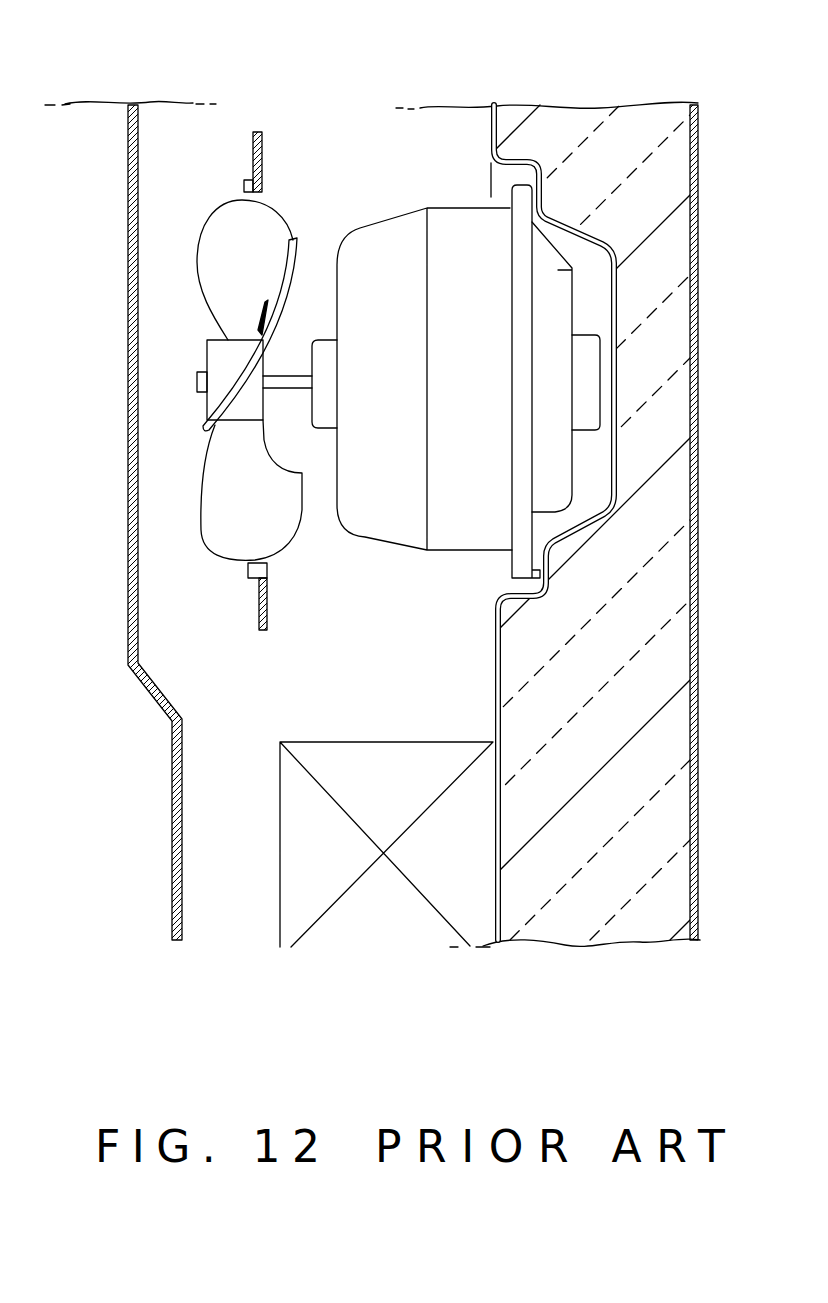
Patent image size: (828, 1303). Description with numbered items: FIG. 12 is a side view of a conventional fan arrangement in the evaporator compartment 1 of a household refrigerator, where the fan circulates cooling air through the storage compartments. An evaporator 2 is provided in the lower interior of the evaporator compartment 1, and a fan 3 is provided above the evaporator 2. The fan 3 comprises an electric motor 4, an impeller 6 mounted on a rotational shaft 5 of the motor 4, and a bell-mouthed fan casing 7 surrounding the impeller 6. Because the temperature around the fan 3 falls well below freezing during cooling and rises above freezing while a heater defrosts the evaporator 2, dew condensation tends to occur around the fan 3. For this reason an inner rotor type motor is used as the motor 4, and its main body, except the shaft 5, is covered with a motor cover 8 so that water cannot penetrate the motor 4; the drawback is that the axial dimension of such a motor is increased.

The evaporator compartment 1 is at (188, 680).
The evaporator 2 is at (381, 898).
The fan 3 is at (377, 210).
The electric motor 4 is at (620, 262).
The rotational shaft 5 is at (287, 372).
The impeller 6 is at (222, 245).
The bell-mouthed fan casing 7 is at (262, 190).
The motor cover 8 is at (458, 525).